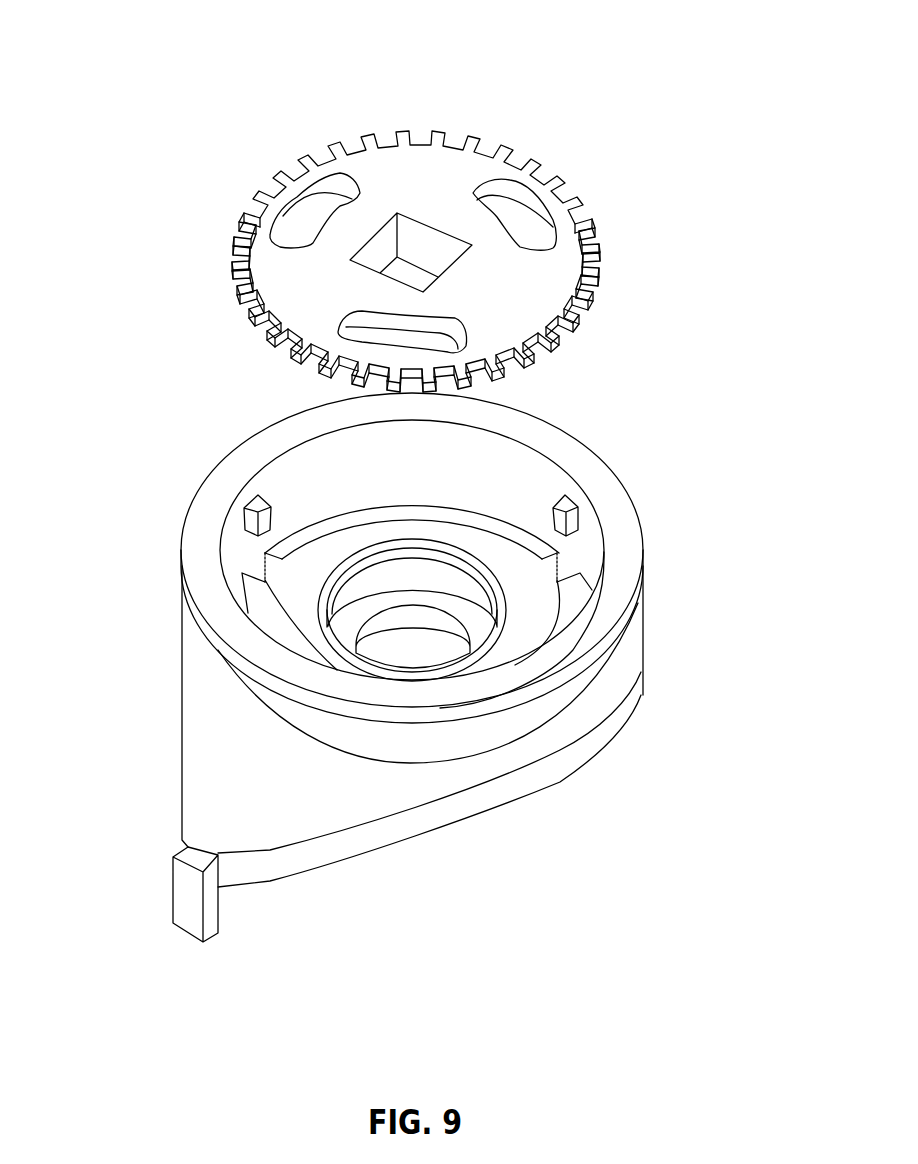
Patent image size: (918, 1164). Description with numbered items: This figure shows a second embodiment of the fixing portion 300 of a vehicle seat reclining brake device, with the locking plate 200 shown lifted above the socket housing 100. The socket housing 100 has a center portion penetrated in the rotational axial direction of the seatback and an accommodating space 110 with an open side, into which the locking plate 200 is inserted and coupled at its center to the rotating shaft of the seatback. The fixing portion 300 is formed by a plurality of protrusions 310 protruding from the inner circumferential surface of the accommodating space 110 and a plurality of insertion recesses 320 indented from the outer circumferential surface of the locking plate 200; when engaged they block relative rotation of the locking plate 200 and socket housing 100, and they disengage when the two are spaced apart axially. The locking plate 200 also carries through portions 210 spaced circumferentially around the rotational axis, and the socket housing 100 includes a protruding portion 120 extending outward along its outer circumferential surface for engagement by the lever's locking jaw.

The socket housing 100 is at (411, 694).
The accommodating space 110 is at (294, 613).
The protruding portion 120 is at (208, 520).
The locking plate 200 is at (430, 209).
The through portions 210 is at (317, 216).
The fixing portion 300 is at (499, 709).
The protrusions 310 is at (568, 507).
The insertion recesses 320 is at (505, 157).